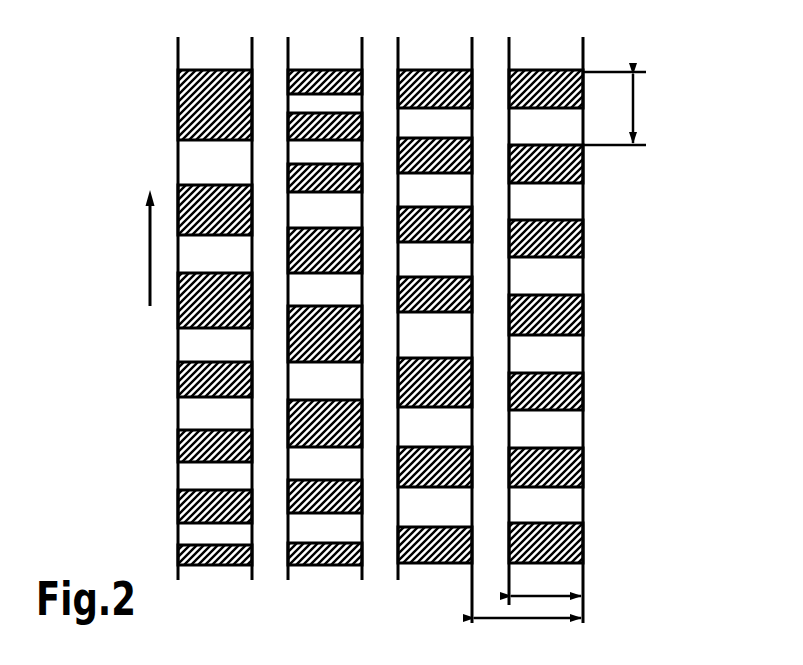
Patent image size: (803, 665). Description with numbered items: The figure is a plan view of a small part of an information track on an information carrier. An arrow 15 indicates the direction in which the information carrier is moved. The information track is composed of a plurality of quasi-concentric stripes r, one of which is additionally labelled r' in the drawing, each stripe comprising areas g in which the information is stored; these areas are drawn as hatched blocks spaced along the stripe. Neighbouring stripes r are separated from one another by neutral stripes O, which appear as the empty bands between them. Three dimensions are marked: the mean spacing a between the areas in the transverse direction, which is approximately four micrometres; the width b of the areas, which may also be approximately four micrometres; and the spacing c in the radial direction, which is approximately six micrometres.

The arrow 15 is at (150, 248).
The quasi-concentric stripes r is at (325, 322).
The adjacent track with shifted pattern r' is at (325, 300).
The neutral stripes O is at (377, 56).
The areas g is at (575, 205).
The mean spacing a is at (636, 110).
The width b is at (546, 582).
The spacing c is at (527, 606).